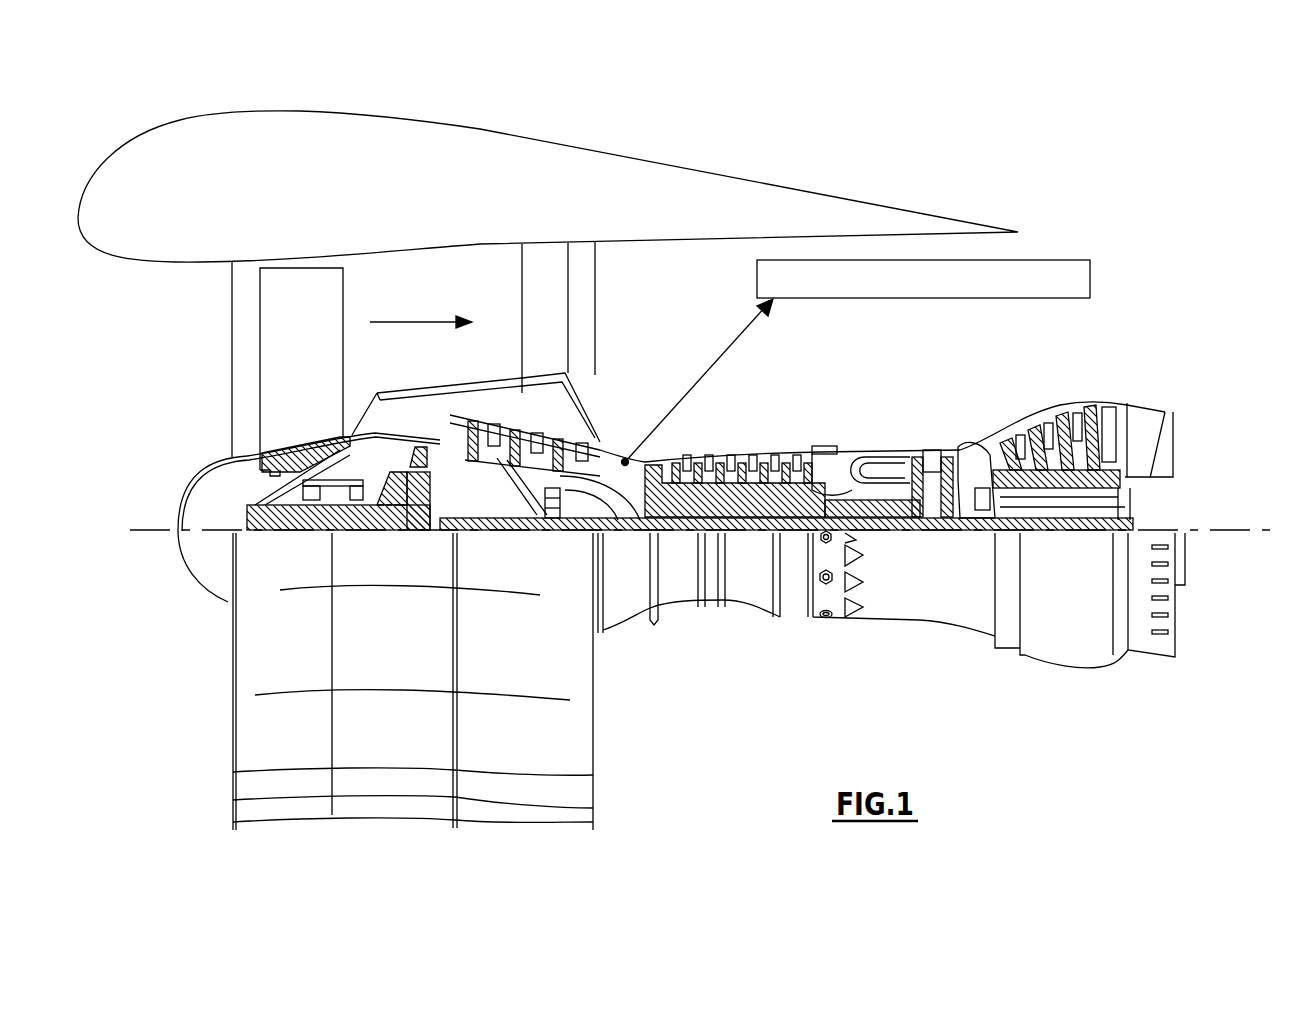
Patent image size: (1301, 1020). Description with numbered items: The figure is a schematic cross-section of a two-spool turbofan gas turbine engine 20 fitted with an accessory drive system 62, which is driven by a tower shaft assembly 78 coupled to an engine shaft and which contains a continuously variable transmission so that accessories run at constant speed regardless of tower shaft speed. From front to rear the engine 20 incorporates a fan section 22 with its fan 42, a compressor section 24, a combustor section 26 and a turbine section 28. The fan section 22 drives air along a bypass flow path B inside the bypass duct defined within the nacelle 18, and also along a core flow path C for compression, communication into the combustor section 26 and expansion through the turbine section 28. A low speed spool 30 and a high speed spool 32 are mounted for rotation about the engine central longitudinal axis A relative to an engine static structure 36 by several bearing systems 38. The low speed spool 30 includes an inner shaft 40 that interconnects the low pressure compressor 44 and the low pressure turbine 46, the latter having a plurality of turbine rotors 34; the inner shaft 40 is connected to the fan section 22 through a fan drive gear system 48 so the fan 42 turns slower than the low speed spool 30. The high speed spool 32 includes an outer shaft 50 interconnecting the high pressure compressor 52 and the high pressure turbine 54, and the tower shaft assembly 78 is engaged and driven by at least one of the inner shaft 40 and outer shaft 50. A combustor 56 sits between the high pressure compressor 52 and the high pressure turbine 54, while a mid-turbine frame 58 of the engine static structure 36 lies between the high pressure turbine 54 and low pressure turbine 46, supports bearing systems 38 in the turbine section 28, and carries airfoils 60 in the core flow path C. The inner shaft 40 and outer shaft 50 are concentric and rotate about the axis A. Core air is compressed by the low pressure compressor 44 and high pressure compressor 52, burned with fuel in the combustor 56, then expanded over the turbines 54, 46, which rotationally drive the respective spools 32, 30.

The nacelle 18 is at (547, 157).
The gas turbine engine 20 is at (1078, 160).
The fan section 22 is at (440, 220).
The compressor section 24 is at (453, 364).
The combustor section 26 is at (915, 364).
The turbine section 28 is at (1128, 364).
The low speed spool 30 is at (752, 546).
The high speed spool 32 is at (798, 451).
The turbine rotors 34 is at (1075, 497).
The engine static structure 36 is at (792, 632).
The bearing systems 38 is at (356, 506).
The inner shaft 40 is at (613, 535).
The fan 42 is at (317, 375).
The low pressure compressor 44 is at (530, 430).
The low pressure turbine 46 is at (1060, 416).
The fan drive gear system 48 is at (416, 512).
The outer shaft 50 is at (874, 512).
The high pressure compressor 52 is at (722, 463).
The high pressure turbine 54 is at (934, 450).
The combustor 56 is at (872, 470).
The mid-turbine frame 58 is at (978, 436).
The airfoils 60 is at (1008, 522).
The accessory drive system 62 is at (1092, 285).
The tower shaft assembly 78 is at (718, 375).
The engine central longitudinal axis A is at (1262, 528).
The bypass flow path B is at (412, 322).
The core flow path C is at (410, 422).